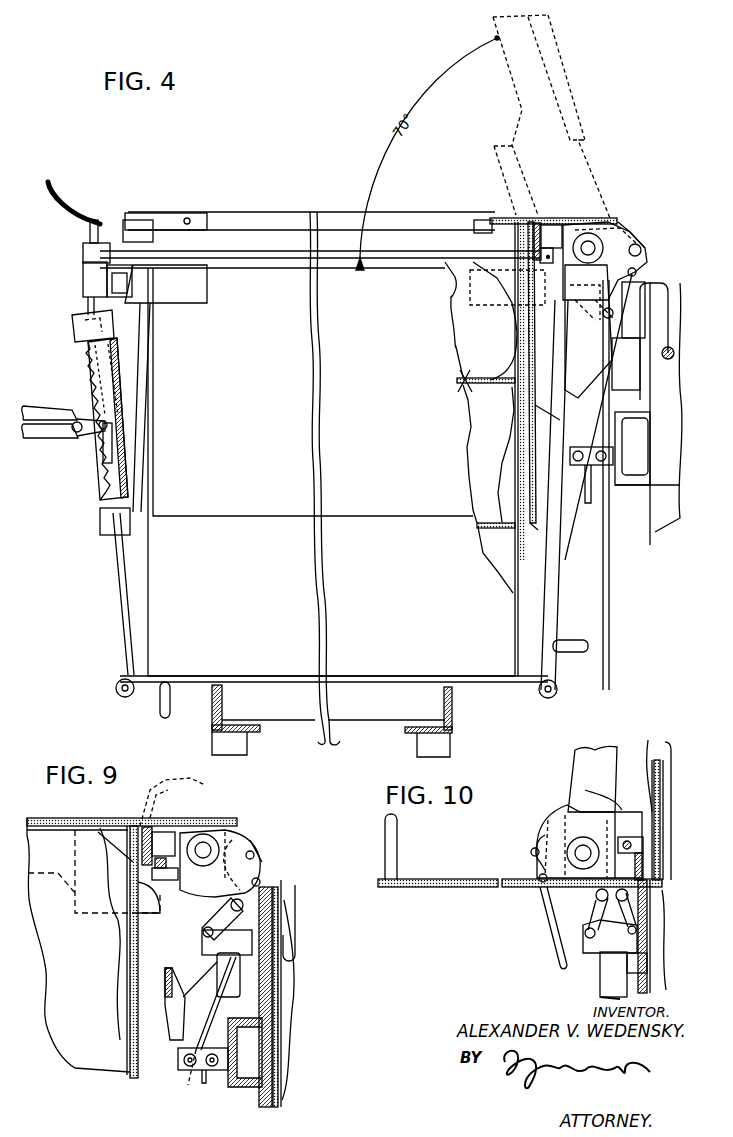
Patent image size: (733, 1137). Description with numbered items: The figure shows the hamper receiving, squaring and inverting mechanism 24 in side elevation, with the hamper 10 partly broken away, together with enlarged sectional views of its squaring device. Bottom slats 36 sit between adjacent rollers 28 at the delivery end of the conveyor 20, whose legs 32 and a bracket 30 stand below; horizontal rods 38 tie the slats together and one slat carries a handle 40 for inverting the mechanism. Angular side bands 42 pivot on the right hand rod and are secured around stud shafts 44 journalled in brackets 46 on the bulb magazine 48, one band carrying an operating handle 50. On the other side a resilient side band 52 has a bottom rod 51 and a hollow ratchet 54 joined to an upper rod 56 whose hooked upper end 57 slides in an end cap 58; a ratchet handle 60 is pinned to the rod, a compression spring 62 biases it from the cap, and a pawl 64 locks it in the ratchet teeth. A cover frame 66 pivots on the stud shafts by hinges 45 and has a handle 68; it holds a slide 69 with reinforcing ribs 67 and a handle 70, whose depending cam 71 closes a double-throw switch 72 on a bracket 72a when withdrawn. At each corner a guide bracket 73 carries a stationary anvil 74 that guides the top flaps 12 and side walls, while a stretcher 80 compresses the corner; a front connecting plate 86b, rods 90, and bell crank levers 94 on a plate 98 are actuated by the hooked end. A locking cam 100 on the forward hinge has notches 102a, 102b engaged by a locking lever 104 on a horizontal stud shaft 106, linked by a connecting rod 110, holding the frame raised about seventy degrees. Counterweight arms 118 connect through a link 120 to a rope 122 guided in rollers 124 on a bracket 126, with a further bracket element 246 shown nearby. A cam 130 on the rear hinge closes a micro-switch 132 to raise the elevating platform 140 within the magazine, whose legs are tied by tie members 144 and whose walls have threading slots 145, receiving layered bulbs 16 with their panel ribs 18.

In FIG. 4, the hamper 10 is at (141, 634).
In FIG. 9, the hamper 10 is at (79, 1066).
In FIG. 4, the bend down top flaps 12 is at (160, 522).
In FIG. 9, the bend down top flaps 12 is at (133, 1078).
In FIG. 10, the bend down top flaps 12 is at (652, 765).
In FIG. 4, the bulbs 16 is at (458, 355).
In FIG. 4, the panel rib 18 is at (462, 384).
In FIG. 4, the conveyor 20 is at (296, 728).
In FIG. 4, the hamper receiving, squaring and inverting mechanism 24 is at (247, 203).
In FIG. 4, the rollers 28 is at (337, 739).
In FIG. 4, the angle bracket 30 is at (210, 728).
In FIG. 4, the legs 32 is at (240, 756).
In FIG. 4, the bottom bands or slats 36 is at (500, 684).
In FIG. 4, the horizontal rods 38 is at (116, 690).
In FIG. 4, the handle 40 is at (158, 708).
In FIG. 4, the angularly extending side bands or slats 42 is at (558, 565).
In FIG. 9, the angularly extending side bands or slats 42 is at (170, 1020).
In FIG. 4, the stud shafts 44 is at (585, 240).
In FIG. 9, the stud shafts 44 is at (205, 848).
In FIG. 10, the stud shafts 44 is at (580, 850).
In FIG. 4, the hinges 45 is at (612, 222).
In FIG. 9, the hinges 45 is at (240, 835).
In FIG. 10, the hinges 45 is at (548, 818).
In FIG. 4, the brackets 46 is at (588, 331).
In FIG. 9, the brackets 46 is at (180, 915).
In FIG. 10, the brackets 46 is at (585, 935).
In FIG. 4, the bulb magazine 48 is at (649, 533).
In FIG. 9, the bulb magazine 48 is at (287, 1070).
In FIG. 10, the bulb magazine 48 is at (625, 980).
In FIG. 4, the operating handle 50 is at (575, 642).
In FIG. 4, the bottom rod 51 is at (120, 600).
In FIG. 4, the resilient side band 52 is at (109, 550).
In FIG. 4, the hollow ratchet 54 is at (100, 485).
In FIG. 4, the upper rod 56 is at (86, 299).
In FIG. 4, the hooked upper end 57 is at (82, 252).
In FIG. 4, the end cap 58 is at (74, 324).
In FIG. 4, the ratchet handle 60 is at (50, 438).
In FIG. 4, the compression spring 62 is at (146, 392).
In FIG. 4, the pawl 64 is at (46, 407).
In FIG. 4, the cover frame 66 is at (281, 250).
In FIG. 9, the cover frame 66 is at (165, 845).
In FIG. 10, the diagonal reinforcing ribs 67 is at (435, 888).
In FIG. 4, the handle 68 is at (55, 182).
In FIG. 4, the slide 69 is at (503, 216).
In FIG. 9, the slide 69 is at (62, 818).
In FIG. 10, the slide 69 is at (432, 874).
In FIG. 4, the handle 70 is at (628, 225).
In FIG. 10, the handle 70 is at (396, 843).
In FIG. 10, the depending cam 71 is at (600, 900).
In FIG. 10, the double-throw switch 72 is at (600, 962).
In FIG. 10, the bracket 72a is at (612, 978).
In FIG. 4, the guide bracket 73 is at (150, 221).
In FIG. 9, the guide bracket 73 is at (190, 800).
In FIG. 10, the guide bracket 73 is at (620, 838).
In FIG. 4, the stationary anvil 74 is at (196, 302).
In FIG. 9, the stationary anvil 74 is at (150, 905).
In FIG. 10, the stationary anvil 74 is at (628, 800).
In FIG. 4, the stretcher 80 is at (483, 220).
In FIG. 9, the stretcher 80 is at (102, 832).
In FIG. 4, the front connecting plate 86b is at (97, 225).
In FIG. 4, the rods 90 is at (545, 262).
In FIG. 9, the rods 90 is at (175, 875).
In FIG. 10, the rods 90 is at (601, 794).
In FIG. 4, the bell crank lever 94 is at (83, 280).
In FIG. 4, the plate 98 is at (132, 281).
In FIG. 4, the locking cam 100 is at (640, 242).
In FIG. 9, the locking cam 100 is at (262, 870).
In FIG. 4, the notch 102a is at (636, 272).
In FIG. 4, the notch 102b is at (575, 300).
In FIG. 4, the locking lever 104 is at (580, 325).
In FIG. 4, the horizontal stud shaft 106 is at (600, 325).
In FIG. 4, the connecting rod 110 is at (610, 583).
In FIG. 4, the arm 118 is at (590, 225).
In FIG. 9, the arm 118 is at (245, 838).
In FIG. 10, the arm 118 is at (540, 833).
In FIG. 4, the link 120 is at (641, 250).
In FIG. 9, the link 120 is at (262, 882).
In FIG. 10, the link 120 is at (538, 875).
In FIG. 4, the rope 122 is at (592, 495).
In FIG. 9, the rope 122 is at (208, 1085).
In FIG. 10, the rope 122 is at (560, 940).
In FIG. 4, the rollers 124 is at (622, 460).
In FIG. 9, the rollers 124 is at (192, 1075).
In FIG. 4, the bracket 126 is at (546, 413).
In FIG. 9, the bracket 126 is at (178, 1062).
In FIG. 9, the cam 130 is at (256, 862).
In FIG. 10, the cam 130 is at (530, 846).
In FIG. 9, the micro-switch 132 is at (240, 985).
In FIG. 10, the micro-switch 132 is at (560, 905).
In FIG. 10, the elevating platform 140 is at (648, 780).
In FIG. 9, the horizontal tie members 144 is at (250, 1030).
In FIG. 4, the longitudinal threading slots 145 is at (600, 385).
In FIG. 9, the longitudinal threading slots 145 is at (298, 948).
In FIG. 4, the bracket 246 is at (668, 360).